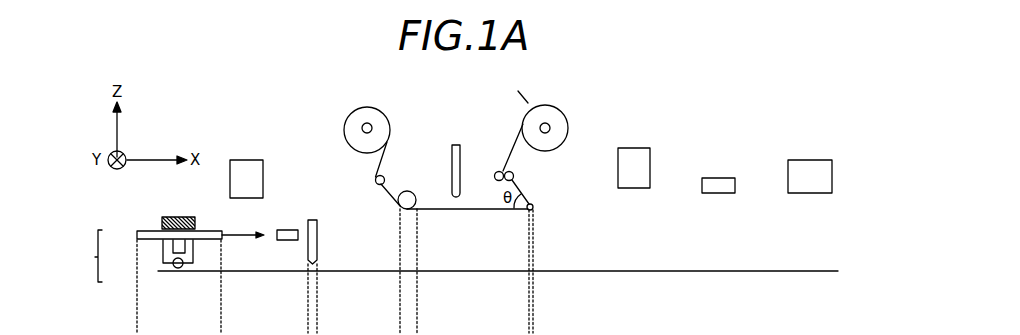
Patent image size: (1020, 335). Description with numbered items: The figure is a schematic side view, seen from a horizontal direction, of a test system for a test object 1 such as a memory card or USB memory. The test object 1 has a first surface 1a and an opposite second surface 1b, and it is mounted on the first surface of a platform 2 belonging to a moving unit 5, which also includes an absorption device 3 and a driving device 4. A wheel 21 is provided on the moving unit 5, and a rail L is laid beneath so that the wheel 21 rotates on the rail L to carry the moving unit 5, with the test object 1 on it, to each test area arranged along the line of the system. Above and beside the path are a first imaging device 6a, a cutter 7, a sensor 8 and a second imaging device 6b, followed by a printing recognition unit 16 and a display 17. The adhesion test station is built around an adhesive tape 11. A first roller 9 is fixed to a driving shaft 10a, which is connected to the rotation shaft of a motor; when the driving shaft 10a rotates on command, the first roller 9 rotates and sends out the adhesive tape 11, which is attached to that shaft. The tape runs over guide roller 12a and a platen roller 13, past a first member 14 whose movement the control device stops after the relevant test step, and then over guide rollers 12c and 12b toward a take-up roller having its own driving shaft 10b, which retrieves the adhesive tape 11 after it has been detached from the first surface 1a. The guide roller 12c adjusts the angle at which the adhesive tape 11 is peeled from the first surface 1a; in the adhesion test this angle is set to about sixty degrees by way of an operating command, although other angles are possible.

The test object 1 is at (195, 241).
The first surface 1a is at (183, 218).
The second surface 1b is at (178, 232).
The platform 2 is at (157, 237).
The absorption device 3 is at (163, 247).
The driving device 4 is at (168, 261).
The moving unit 5 is at (171, 257).
The first imaging device 6a is at (242, 170).
The second imaging device 6b is at (633, 153).
The cutter 7 is at (312, 220).
The sensor 8 is at (288, 230).
The first roller 9 is at (368, 104).
The driving shaft 10a is at (370, 125).
The driving shaft 10b is at (548, 127).
The adhesive tape 11 is at (453, 210).
The guide roller 12a is at (383, 177).
The guide roller 12b is at (532, 203).
The guide roller 12c is at (497, 172).
The platen roller 13 is at (416, 198).
The first member 14 is at (457, 145).
The printing recognition unit 16 is at (715, 180).
The display 17 is at (795, 167).
The wheel 21 is at (178, 268).
The rail L is at (644, 268).